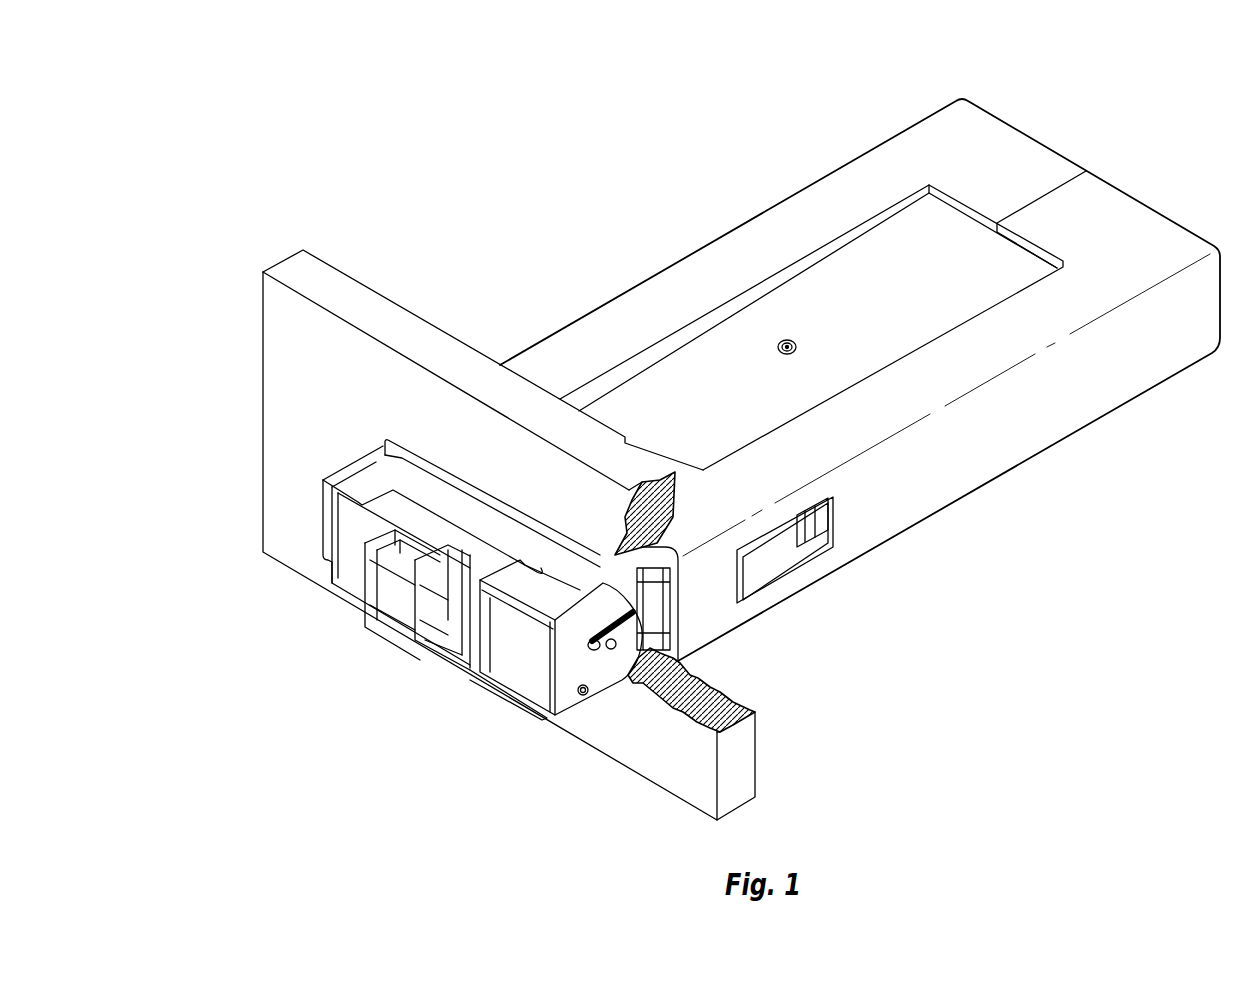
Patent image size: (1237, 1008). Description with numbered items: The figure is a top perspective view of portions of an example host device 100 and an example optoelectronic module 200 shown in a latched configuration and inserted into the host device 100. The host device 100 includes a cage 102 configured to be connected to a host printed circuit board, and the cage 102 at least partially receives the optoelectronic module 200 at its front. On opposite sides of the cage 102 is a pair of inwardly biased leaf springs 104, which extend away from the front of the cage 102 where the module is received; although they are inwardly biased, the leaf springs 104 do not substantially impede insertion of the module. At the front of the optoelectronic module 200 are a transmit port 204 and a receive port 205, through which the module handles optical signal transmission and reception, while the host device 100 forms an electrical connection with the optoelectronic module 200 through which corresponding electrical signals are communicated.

The host device 100 is at (272, 108).
The cage 102 is at (940, 475).
The leaf springs 104 is at (767, 563).
The optoelectronic module 200 is at (316, 521).
The transmit port 204 is at (386, 589).
The receive port 205 is at (429, 609).